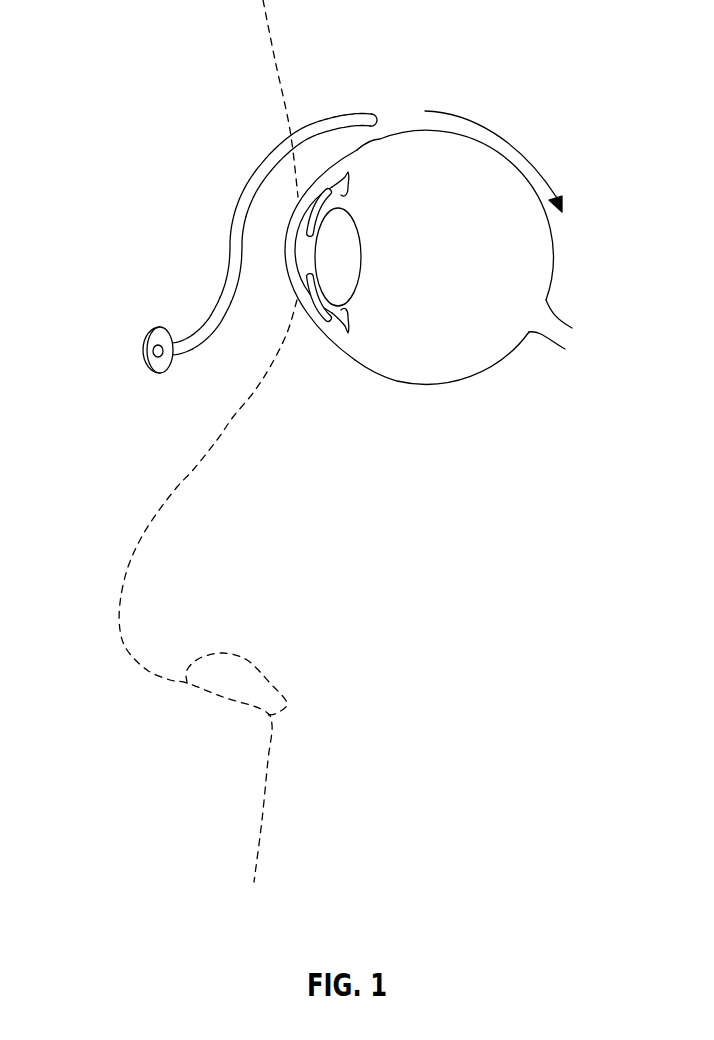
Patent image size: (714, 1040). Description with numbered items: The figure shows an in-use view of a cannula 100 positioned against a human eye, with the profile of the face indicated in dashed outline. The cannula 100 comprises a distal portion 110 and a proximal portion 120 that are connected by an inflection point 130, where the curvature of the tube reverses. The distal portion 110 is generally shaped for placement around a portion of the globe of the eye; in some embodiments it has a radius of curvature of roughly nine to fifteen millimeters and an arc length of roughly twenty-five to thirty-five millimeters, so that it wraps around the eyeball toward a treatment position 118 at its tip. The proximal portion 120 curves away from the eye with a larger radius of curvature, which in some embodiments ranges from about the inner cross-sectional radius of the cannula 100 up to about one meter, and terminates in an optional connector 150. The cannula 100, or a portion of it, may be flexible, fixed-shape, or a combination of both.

The cannula 100 is at (172, 123).
The distal portion of cannula 110 is at (277, 148).
The treatment position 118 is at (356, 127).
The proximal portion of cannula 120 is at (212, 330).
The inflection point of cannula 130 is at (230, 270).
The connector 150 is at (147, 332).